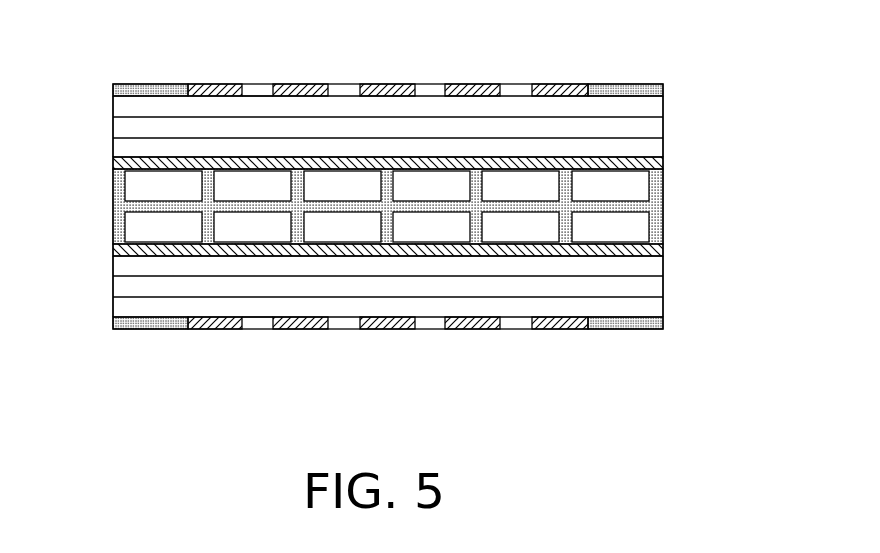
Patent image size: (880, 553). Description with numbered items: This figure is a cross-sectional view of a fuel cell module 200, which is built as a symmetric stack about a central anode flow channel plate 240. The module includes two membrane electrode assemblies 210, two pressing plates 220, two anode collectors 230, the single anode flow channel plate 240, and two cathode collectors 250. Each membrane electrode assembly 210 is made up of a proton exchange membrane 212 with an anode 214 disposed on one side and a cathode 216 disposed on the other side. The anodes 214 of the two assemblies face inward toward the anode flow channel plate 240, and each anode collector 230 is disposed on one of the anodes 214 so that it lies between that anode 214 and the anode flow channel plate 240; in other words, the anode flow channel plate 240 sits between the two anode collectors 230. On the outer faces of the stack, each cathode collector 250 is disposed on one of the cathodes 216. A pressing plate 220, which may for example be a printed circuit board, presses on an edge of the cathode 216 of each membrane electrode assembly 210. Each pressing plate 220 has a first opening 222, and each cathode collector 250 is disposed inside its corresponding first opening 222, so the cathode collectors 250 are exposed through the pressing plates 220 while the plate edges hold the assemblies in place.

The fuel cell module 200 is at (705, 485).
The membrane electrode assembly 210 is at (737, 43).
The proton exchange membrane 212 is at (647, 126).
The anode 214 is at (647, 147).
The cathode 216 is at (647, 107).
The pressing plate 220 is at (638, 92).
The first opening 222 is at (262, 92).
The anode collector 230 is at (652, 161).
The anode flow channel plate 240 is at (652, 203).
The cathode collector 250 is at (563, 90).